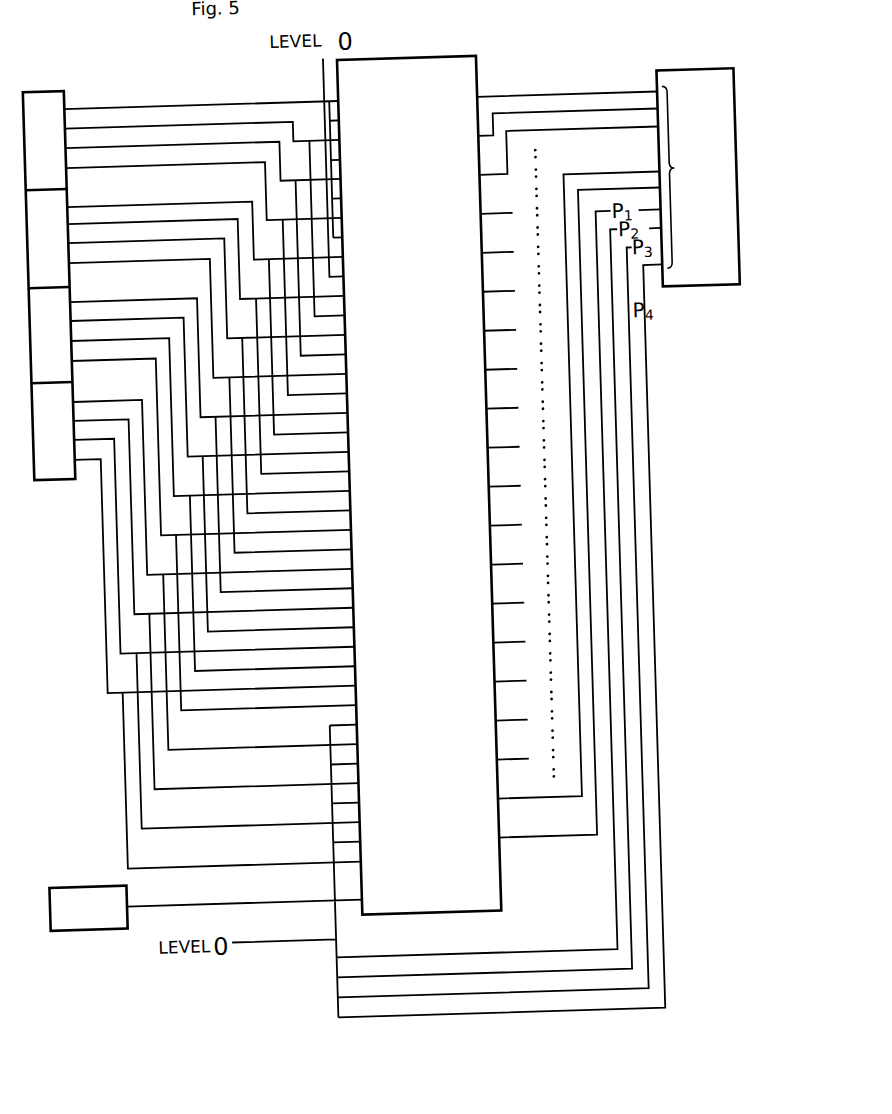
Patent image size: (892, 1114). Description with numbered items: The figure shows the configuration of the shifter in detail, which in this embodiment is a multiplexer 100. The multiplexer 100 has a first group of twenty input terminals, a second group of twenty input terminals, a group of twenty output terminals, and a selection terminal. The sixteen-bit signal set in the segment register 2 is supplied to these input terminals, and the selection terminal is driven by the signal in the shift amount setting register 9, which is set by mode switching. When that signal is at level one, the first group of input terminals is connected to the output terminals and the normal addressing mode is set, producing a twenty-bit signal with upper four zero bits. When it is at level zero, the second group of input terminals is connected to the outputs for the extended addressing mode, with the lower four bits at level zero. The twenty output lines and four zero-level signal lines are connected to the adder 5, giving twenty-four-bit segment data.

The multiplexer 100 is at (455, 58).
The segment register 2 is at (40, 474).
The adder 5 is at (733, 297).
The shift amount setting register 9 is at (57, 921).